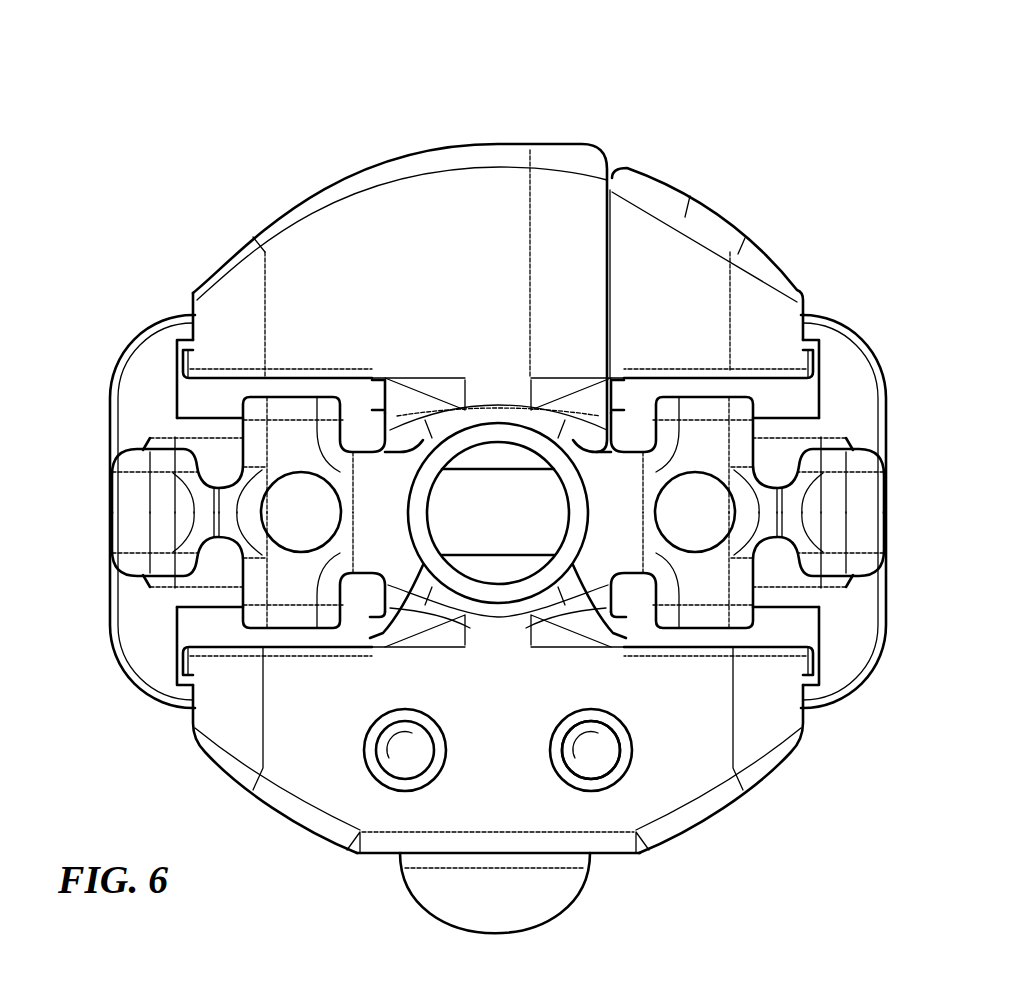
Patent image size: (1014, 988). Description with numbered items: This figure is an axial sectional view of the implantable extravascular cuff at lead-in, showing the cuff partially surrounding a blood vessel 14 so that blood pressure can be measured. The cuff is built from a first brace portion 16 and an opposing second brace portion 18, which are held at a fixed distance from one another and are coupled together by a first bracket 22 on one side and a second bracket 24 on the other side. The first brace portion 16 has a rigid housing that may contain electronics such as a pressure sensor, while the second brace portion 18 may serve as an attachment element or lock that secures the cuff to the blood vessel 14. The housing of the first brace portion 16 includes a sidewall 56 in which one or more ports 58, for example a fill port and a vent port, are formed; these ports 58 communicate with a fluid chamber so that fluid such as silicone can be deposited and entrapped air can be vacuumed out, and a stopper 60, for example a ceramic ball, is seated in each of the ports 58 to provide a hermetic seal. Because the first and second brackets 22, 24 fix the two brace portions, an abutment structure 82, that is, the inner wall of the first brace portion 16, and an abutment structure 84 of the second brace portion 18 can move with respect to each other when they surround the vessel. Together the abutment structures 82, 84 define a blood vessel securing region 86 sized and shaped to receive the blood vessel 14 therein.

The blood vessel 14 is at (497, 437).
The first brace portion 16 is at (211, 757).
The second brace portion 18 is at (732, 222).
The first bracket 22 is at (108, 400).
The second bracket 24 is at (884, 405).
The sidewall 56 is at (705, 723).
The ports 58 is at (628, 757).
The stopper 60 is at (597, 747).
The abutment structure 82 is at (452, 600).
The abutment structure 84 is at (448, 428).
The blood vessel securing region 86 is at (546, 433).